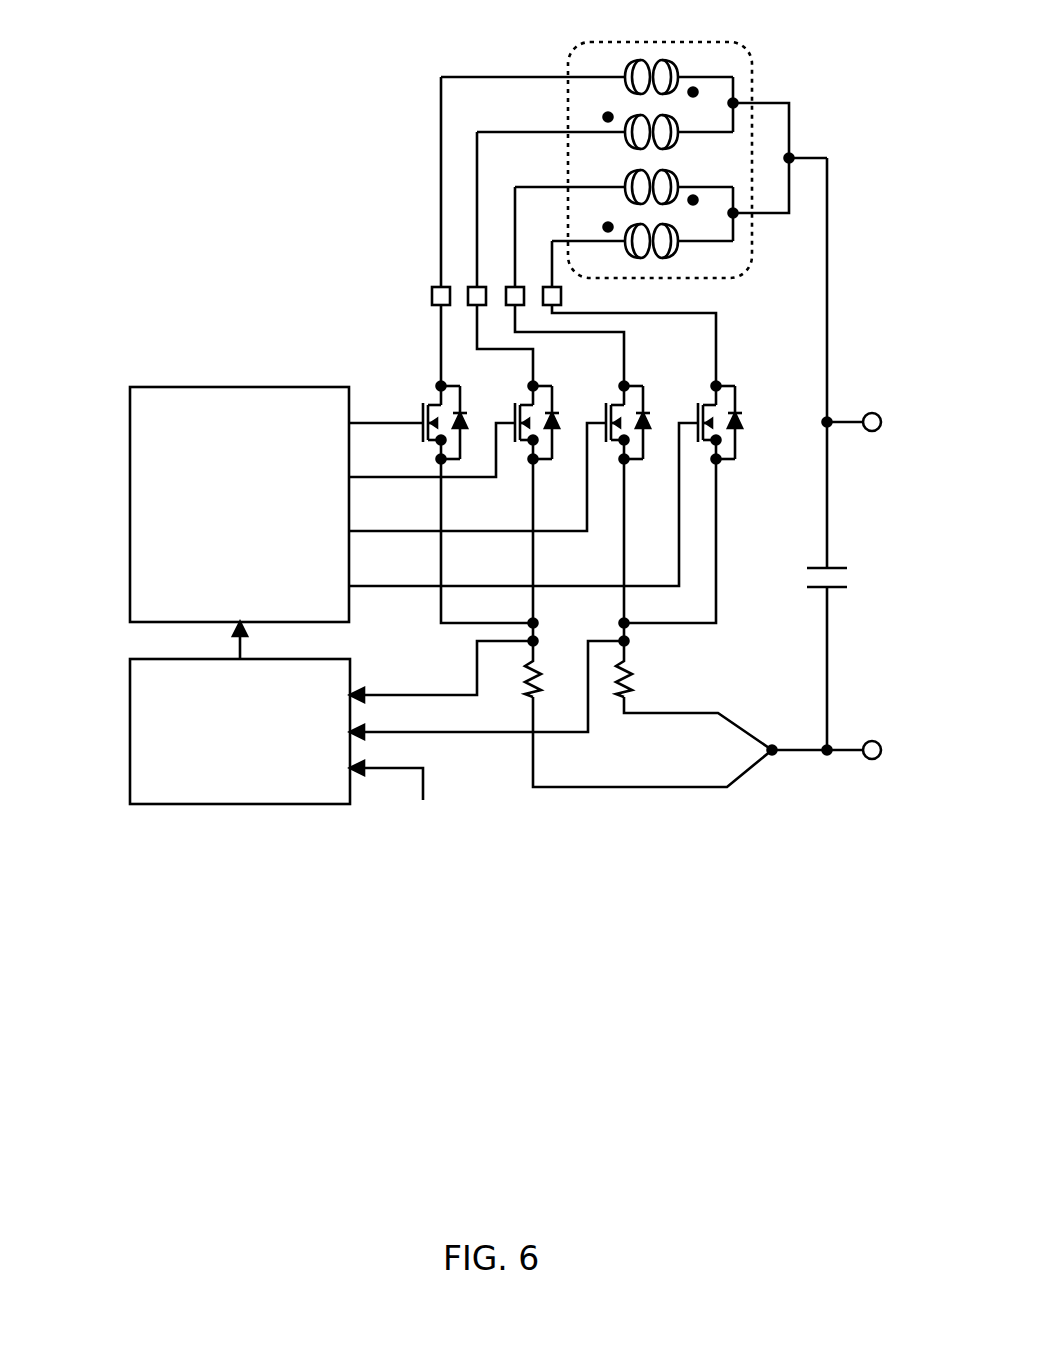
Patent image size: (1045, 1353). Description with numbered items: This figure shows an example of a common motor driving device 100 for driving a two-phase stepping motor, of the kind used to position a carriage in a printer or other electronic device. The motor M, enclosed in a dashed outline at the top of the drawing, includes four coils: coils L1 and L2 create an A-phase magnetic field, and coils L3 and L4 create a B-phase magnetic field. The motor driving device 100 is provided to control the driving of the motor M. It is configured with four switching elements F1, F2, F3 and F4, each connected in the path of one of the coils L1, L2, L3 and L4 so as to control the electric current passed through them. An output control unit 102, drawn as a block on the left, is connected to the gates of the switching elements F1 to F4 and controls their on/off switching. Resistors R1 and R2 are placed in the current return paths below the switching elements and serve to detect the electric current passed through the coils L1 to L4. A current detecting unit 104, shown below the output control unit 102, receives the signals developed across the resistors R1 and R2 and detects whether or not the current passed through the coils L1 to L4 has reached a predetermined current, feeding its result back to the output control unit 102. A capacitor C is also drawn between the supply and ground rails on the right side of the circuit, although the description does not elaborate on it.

The motor driving device 100 is at (322, 281).
The output control unit 102 is at (232, 387).
The current detecting unit 104 is at (130, 713).
The motor M is at (634, 142).
The coil L1 is at (587, 71).
The coil L2 is at (605, 138).
The coil L3 is at (624, 180).
The coil L4 is at (642, 247).
The switching element F1 is at (408, 413).
The switching element F2 is at (454, 420).
The switching element F3 is at (499, 447).
The switching element F4 is at (545, 474).
The resistor R1 is at (515, 677).
The resistor R2 is at (643, 677).
The capacitor C is at (830, 560).